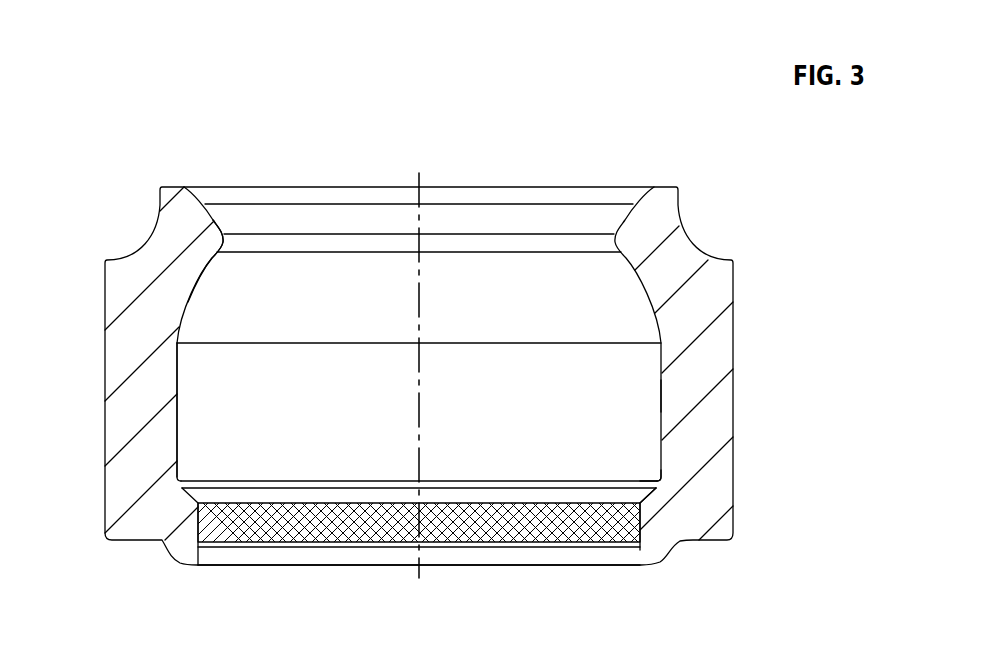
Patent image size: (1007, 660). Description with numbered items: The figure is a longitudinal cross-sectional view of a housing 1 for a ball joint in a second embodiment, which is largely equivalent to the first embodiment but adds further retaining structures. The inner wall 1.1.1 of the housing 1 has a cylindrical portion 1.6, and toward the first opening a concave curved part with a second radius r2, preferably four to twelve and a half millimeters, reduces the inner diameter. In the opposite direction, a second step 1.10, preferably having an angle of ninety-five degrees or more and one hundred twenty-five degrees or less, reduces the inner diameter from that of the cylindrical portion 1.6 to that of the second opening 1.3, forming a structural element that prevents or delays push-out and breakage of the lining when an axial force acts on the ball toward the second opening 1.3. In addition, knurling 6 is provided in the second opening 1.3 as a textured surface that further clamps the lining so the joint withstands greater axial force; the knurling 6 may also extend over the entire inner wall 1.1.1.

The housing 1 is at (695, 297).
The inner wall 1.1.1 is at (186, 415).
The second opening 1.3 is at (506, 572).
The cylindrical portion 1.6 is at (662, 385).
The second step 1.10 is at (662, 489).
The knurling 6 is at (612, 530).
The second radius r2 is at (212, 268).